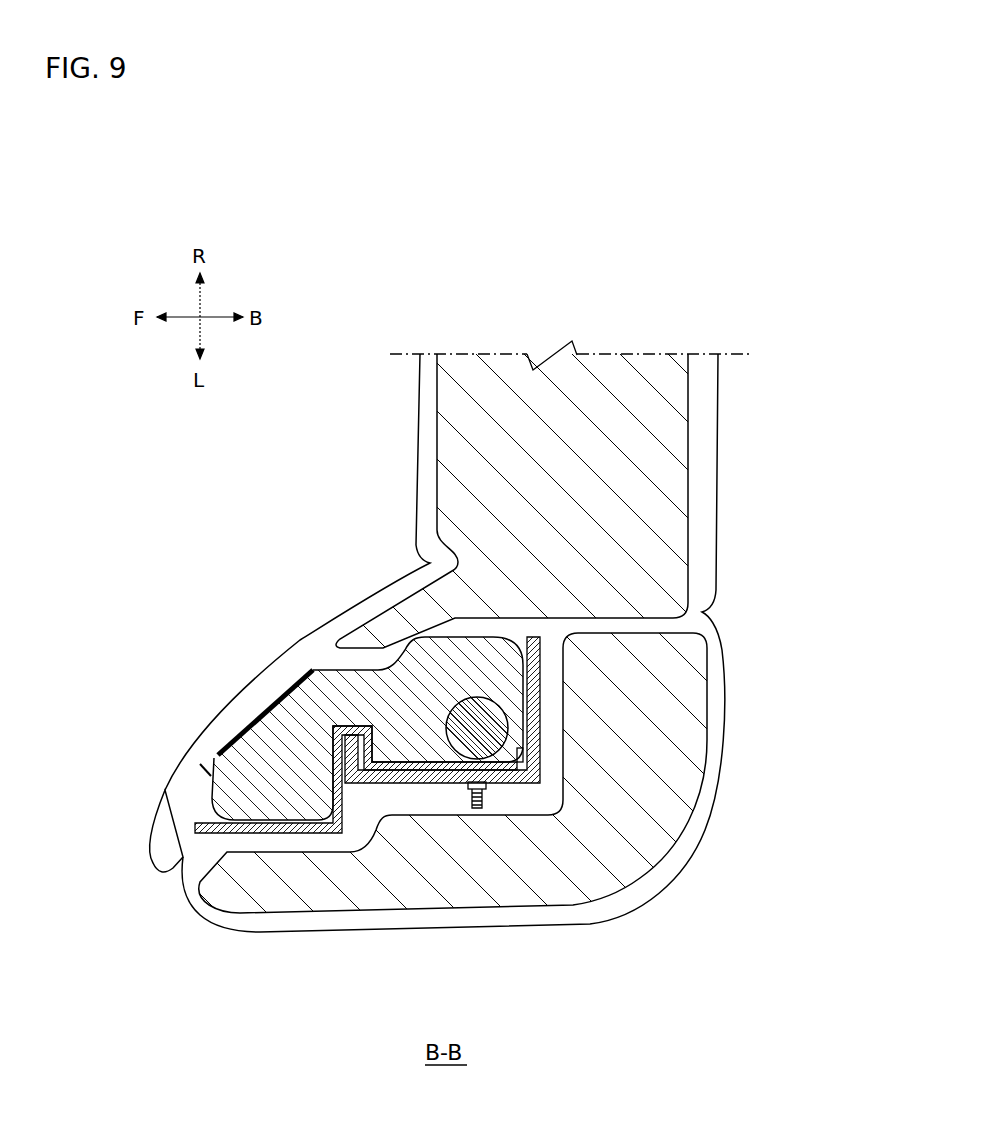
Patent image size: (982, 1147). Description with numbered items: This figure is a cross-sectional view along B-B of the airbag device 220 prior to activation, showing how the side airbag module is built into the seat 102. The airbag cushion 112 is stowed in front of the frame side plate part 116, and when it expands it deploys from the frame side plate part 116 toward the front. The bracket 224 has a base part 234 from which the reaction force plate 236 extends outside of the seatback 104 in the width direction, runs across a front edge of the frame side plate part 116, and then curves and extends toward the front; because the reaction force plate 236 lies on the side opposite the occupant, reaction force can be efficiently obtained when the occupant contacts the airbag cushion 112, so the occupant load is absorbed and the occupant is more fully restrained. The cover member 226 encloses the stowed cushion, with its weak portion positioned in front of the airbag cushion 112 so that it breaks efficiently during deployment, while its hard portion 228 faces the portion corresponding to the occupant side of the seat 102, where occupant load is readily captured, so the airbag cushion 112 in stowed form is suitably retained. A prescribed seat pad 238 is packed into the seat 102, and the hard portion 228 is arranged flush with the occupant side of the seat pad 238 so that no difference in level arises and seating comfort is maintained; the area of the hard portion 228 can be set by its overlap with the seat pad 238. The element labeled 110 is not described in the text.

The seat 102 is at (719, 440).
The seatback 104 is at (419, 417).
The seal bead 110 is at (508, 714).
The airbag cushion 112 is at (507, 638).
The frame side plate part 116 is at (422, 786).
The airbag device 220 is at (516, 606).
The bracket 224 is at (203, 837).
The cover member 226 is at (180, 818).
The hard portion 228 is at (230, 722).
The base part 234 is at (383, 785).
The reaction force plate 236 is at (255, 835).
The seat pad 238 is at (363, 613).